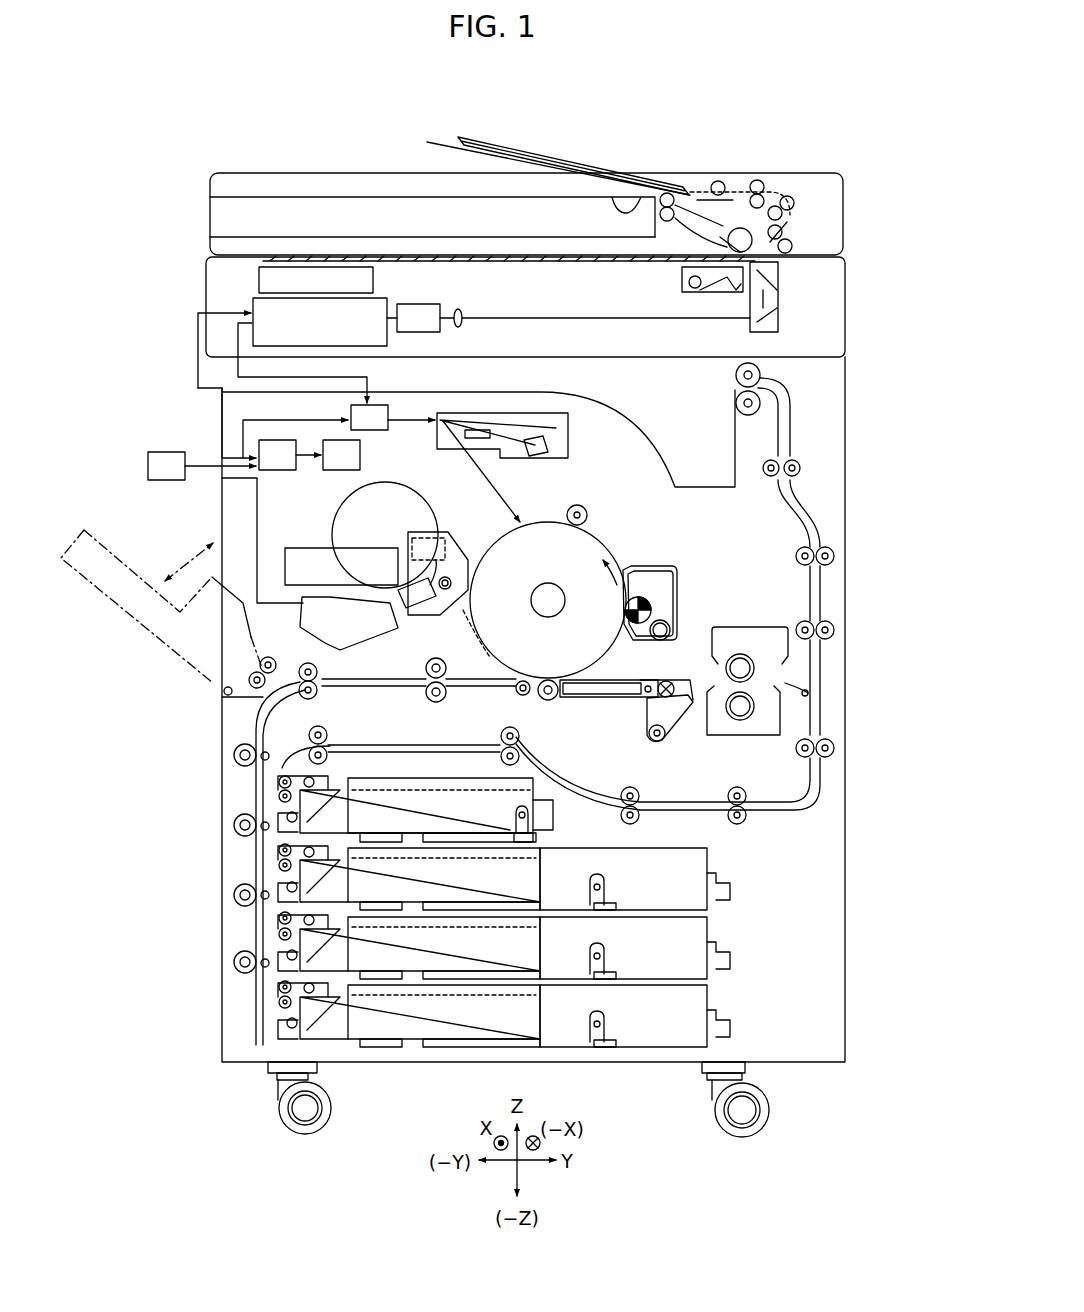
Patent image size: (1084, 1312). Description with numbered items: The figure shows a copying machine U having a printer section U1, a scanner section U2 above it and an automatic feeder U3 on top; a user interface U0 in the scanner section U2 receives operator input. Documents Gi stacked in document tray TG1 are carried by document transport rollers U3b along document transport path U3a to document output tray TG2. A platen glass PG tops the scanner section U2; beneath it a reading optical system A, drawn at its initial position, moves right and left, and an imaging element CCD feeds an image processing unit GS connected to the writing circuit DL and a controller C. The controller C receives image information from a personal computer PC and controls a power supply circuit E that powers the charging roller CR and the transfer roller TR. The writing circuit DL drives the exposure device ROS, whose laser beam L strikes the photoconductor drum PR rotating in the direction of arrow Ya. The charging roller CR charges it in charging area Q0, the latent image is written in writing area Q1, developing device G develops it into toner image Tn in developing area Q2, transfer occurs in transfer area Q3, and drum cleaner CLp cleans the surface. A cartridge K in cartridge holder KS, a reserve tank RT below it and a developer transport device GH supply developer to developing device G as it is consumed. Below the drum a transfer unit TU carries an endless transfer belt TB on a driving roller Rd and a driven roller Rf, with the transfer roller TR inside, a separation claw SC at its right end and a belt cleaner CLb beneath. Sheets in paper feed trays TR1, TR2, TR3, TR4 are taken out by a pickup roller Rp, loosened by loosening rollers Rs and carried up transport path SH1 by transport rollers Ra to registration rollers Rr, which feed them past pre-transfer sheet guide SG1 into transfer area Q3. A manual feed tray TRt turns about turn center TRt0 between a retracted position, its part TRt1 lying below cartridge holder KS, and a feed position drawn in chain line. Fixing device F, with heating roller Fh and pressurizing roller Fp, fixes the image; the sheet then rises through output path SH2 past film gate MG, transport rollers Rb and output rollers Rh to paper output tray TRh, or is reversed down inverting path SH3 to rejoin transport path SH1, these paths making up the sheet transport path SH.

The copying machine U is at (881, 190).
The printer section U1 is at (845, 375).
The scanner section U2 is at (845, 297).
The automatic feeder U3 is at (845, 205).
The document transport path U3a is at (731, 185).
The document transport rollers U3b is at (782, 198).
The document tray TG1 is at (430, 142).
The document output tray TG2 is at (460, 237).
The documents Gi is at (512, 138).
The user interface U0 is at (320, 268).
The platen glass PG is at (548, 263).
The image processing unit GS is at (248, 300).
The imaging element CCD is at (420, 305).
The reading optical system A is at (792, 286).
The paper output tray TRh is at (618, 372).
The personal computer PC is at (170, 452).
The controller C is at (282, 443).
The power supply circuit E is at (361, 455).
The writing circuit DL is at (378, 405).
The cartridge K is at (308, 507).
The cartridge holder KS is at (400, 530).
The reserve tank RT is at (340, 586).
The developing device G is at (437, 528).
The developer transport device GH is at (376, 640).
The exposure device ROS is at (580, 440).
The laser beam L is at (500, 493).
The photoconductor drum PR is at (597, 630).
The charging roller CR is at (590, 514).
The charging area Q0 is at (578, 525).
The writing area Q1 is at (521, 528).
The developing area Q2 is at (472, 600).
The transfer area Q3 is at (548, 676).
The arrow Ya is at (601, 575).
The drum cleaner CLp is at (672, 566).
The transfer belt TB is at (640, 697).
The driving roller Rd is at (662, 681).
The separation claw SC is at (676, 682).
The belt cleaner CLb is at (686, 740).
The transfer unit TU is at (532, 702).
The transfer roller TR is at (548, 700).
The driven roller Rf is at (521, 678).
The toner image Tn is at (451, 677).
The registration rollers Rr is at (426, 693).
The pre-transfer sheet guide SG1 is at (472, 690).
The manual feed tray TRt is at (230, 522).
The part of the manual feed tray TRt1 is at (268, 613).
The turn center TRt0 is at (224, 694).
The transport rollers Ra is at (260, 664).
The transport rollers Rb is at (834, 630).
The output rollers Rh is at (752, 416).
The sheet transport path SH is at (246, 1050).
The transport path SH1 is at (240, 1002).
The output path SH2 is at (797, 518).
The inverting path SH3 is at (590, 773).
The gate MG is at (810, 693).
The fixing device F is at (757, 620).
The heating roller Fh is at (748, 668).
The pressurizing roller Fp is at (738, 720).
The paper feed tray TR1 is at (537, 806).
The paper feed tray TR2 is at (520, 874).
The paper feed tray TR3 is at (520, 943).
The paper feed tray TR4 is at (520, 1011).
The loosening rollers Rs is at (285, 777).
The pickup roller Rp is at (316, 780).